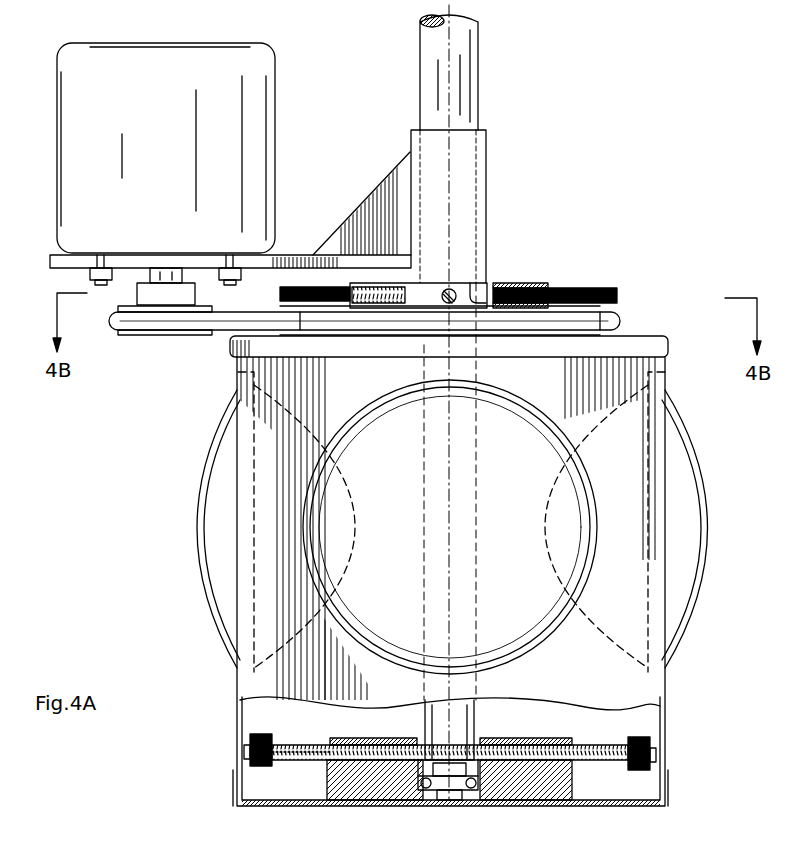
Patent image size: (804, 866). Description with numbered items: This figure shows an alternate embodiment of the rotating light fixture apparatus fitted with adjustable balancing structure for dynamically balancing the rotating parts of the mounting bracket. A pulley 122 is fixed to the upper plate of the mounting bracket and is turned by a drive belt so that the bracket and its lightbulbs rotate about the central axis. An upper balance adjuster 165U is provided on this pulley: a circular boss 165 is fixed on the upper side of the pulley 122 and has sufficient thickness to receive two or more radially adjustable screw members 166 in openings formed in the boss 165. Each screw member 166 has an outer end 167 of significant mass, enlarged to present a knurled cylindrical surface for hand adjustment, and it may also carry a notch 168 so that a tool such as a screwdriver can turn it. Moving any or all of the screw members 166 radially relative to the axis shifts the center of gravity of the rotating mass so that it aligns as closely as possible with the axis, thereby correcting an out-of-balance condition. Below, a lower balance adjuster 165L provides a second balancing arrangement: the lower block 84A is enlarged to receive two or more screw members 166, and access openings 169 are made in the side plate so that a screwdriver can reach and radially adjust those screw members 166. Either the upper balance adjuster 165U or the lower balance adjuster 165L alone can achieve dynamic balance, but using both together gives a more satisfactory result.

The pulley 122 is at (618, 318).
The upper balance adjuster 165U is at (497, 250).
The circular boss 165 is at (497, 283).
The lower balance adjuster 165L is at (314, 783).
The screw member 166 is at (326, 278).
The outer end 167 is at (297, 287).
The notch 168 is at (443, 300).
The access opening 169 is at (237, 767).
The lower block 84A is at (373, 782).